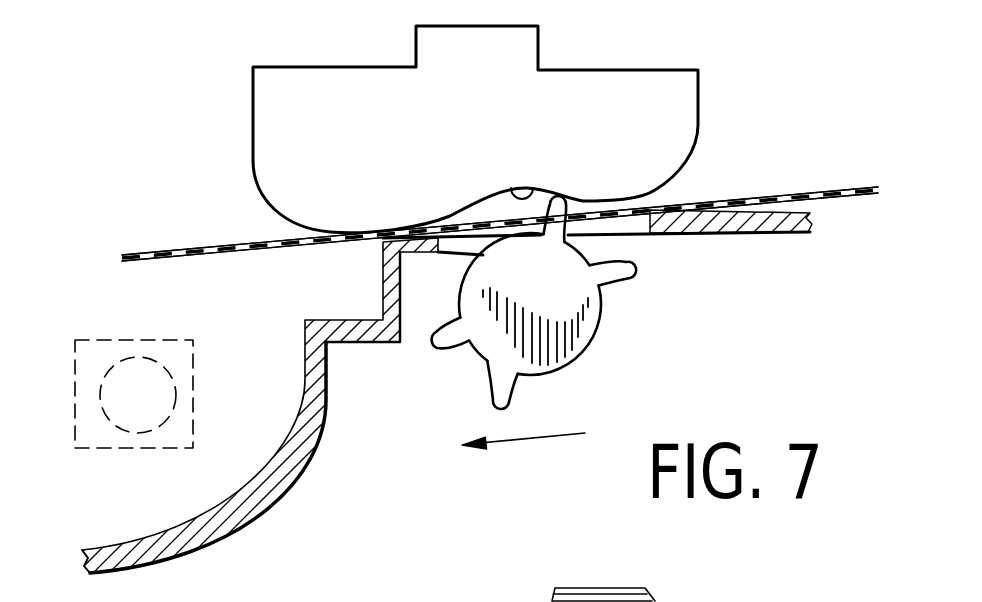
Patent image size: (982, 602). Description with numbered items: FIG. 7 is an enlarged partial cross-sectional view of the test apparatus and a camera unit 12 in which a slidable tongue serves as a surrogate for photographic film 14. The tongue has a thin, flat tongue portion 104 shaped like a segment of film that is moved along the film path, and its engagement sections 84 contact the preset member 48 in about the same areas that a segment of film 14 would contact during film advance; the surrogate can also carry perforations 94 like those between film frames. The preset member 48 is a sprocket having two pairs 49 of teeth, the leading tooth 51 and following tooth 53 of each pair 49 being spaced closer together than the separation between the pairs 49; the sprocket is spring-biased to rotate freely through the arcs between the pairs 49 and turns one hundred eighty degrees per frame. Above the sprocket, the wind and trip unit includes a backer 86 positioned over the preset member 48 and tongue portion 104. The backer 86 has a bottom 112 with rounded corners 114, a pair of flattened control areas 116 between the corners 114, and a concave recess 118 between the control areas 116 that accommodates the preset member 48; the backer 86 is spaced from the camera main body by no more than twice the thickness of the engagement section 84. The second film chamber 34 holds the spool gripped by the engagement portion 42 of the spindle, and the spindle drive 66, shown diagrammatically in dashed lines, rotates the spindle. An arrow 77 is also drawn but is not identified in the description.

The backer 86 is at (627, 68).
The concave recess 118 is at (530, 193).
The tongue portion 104 is at (155, 262).
The engagement section 84 is at (700, 200).
The perforations 94 is at (688, 196).
The rounded corners 114 is at (678, 196).
The bottom 112 is at (280, 213).
The photographic film 14 is at (840, 196).
The camera unit 12 is at (313, 433).
The flattened control areas 116 is at (378, 236).
The second film chamber 34 is at (97, 550).
The spindle drive 66 is at (197, 345).
The engagement portion 42 is at (178, 408).
The preset member 48 is at (600, 302).
The pair of teeth 49 is at (600, 302).
The leading tooth 51 is at (660, 272).
The following tooth 53 is at (688, 254).
The direction of movement 77 is at (518, 443).